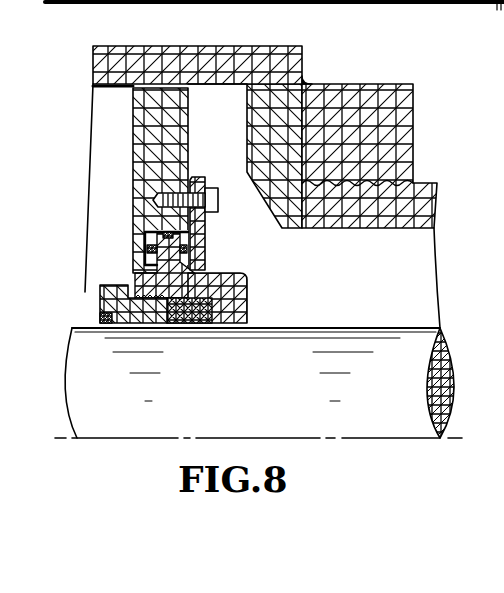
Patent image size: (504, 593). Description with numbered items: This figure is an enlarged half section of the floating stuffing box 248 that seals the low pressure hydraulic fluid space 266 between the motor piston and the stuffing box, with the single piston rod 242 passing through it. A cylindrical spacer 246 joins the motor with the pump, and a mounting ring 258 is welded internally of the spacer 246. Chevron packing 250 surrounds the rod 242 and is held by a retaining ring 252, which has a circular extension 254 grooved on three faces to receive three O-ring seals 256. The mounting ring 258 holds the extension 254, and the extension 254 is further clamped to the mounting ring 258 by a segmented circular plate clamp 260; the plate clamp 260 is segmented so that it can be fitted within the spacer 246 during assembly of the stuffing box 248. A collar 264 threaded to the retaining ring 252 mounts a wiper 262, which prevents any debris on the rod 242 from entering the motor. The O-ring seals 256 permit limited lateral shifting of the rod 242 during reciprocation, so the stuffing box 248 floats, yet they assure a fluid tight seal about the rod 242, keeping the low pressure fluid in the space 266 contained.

The piston rod 242 is at (403, 420).
The cylindrical spacer 246 is at (233, 48).
The floating stuffing box 248 is at (104, 210).
The chevron packing 250 is at (188, 327).
The retaining ring 252 is at (241, 286).
The circular extension 254 is at (205, 269).
The O-ring seals 256 is at (150, 237).
The mounting ring 258 is at (140, 168).
The segmented circular plate clamp 260 is at (206, 236).
The wiper 262 is at (110, 326).
The collar 264 is at (106, 294).
The space 266 is at (235, 150).